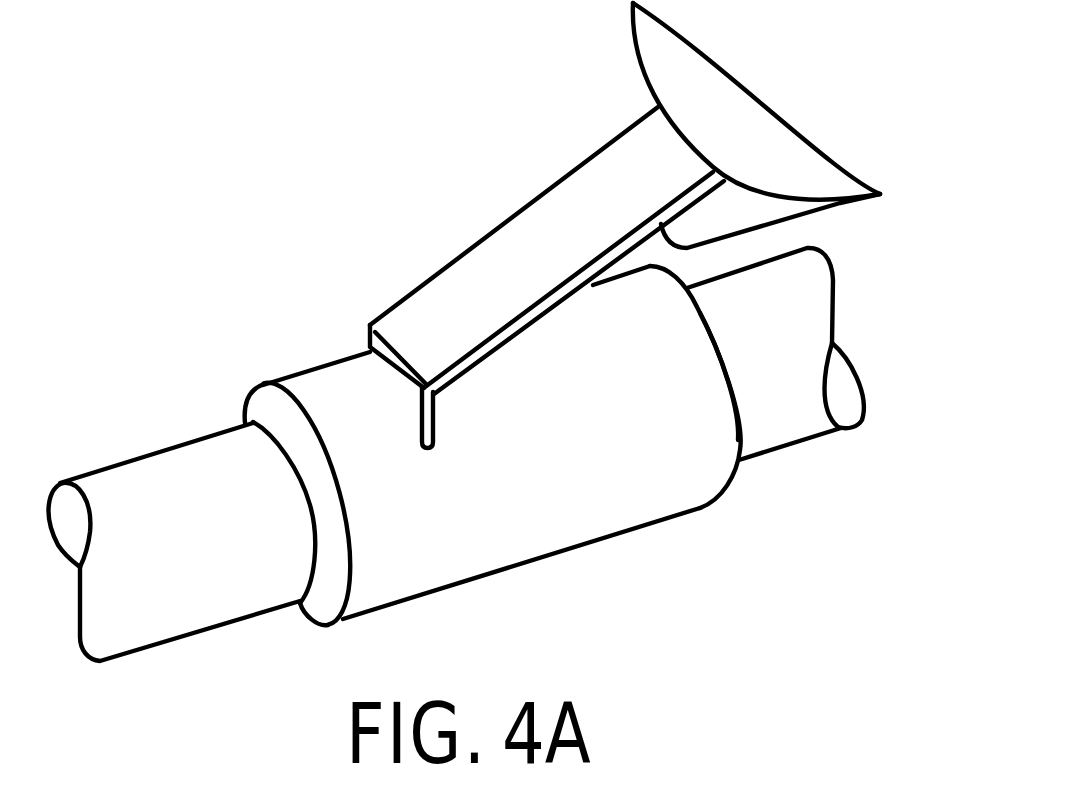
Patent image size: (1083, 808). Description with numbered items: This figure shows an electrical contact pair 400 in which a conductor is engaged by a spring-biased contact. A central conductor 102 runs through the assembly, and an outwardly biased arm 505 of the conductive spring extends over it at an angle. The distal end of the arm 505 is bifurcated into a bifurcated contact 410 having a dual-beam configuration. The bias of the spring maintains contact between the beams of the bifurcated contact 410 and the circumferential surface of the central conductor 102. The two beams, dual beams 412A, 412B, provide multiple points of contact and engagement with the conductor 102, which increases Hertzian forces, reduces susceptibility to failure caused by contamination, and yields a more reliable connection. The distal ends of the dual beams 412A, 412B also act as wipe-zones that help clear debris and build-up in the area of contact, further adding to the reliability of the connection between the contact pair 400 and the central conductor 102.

The central conductor 102 is at (687, 511).
The electrical contact pair 400 is at (556, 239).
The bifurcated contact 410 is at (396, 383).
The dual beam 412A is at (437, 416).
The dual beam 412B is at (370, 342).
The arm 505 is at (564, 176).